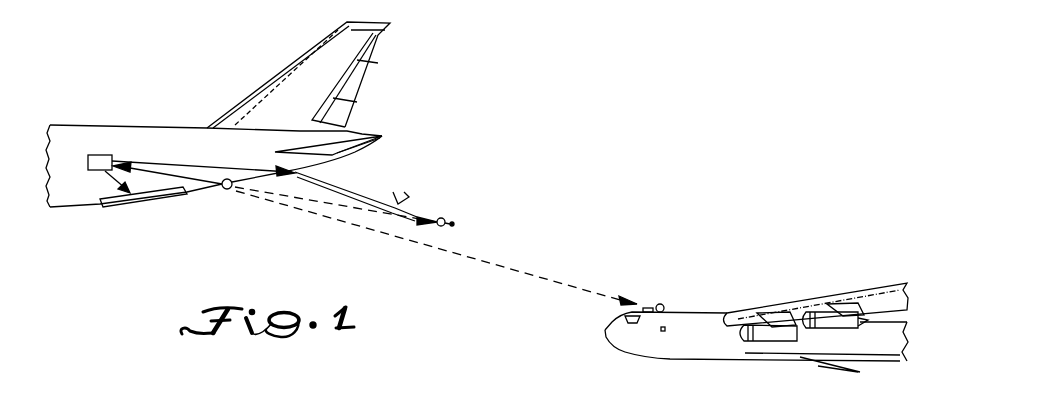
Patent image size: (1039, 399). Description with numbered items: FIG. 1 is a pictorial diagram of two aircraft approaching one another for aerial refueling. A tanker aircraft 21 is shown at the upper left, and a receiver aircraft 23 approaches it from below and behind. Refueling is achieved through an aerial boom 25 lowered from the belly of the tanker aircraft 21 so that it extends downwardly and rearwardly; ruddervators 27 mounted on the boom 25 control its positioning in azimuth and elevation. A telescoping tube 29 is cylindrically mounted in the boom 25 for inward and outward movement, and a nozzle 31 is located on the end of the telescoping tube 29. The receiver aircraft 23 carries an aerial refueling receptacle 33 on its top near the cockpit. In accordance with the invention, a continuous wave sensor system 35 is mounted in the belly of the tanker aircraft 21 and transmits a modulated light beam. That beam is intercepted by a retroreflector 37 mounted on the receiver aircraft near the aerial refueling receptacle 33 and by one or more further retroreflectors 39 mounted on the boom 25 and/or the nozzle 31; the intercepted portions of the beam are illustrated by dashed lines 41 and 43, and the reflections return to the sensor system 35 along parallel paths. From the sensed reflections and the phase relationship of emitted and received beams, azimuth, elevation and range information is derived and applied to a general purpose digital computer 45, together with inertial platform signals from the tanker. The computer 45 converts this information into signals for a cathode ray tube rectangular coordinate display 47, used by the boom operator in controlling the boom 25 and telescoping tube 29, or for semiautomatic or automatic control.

The tanker aircraft 21 is at (233, 102).
The receiver aircraft 23 is at (745, 300).
The aerial boom 25 is at (356, 178).
The ruddervators 27 is at (404, 193).
The telescoping tube 29 is at (441, 216).
The nozzle 31 is at (455, 226).
The aerial refueling receptacle 33 is at (647, 307).
The continuous wave (CW) sensor system 35 is at (224, 190).
The retroreflector 37 is at (662, 305).
The further retroreflectors 39 is at (451, 220).
The dashed line 41 is at (396, 243).
The dashed line 43 is at (320, 204).
The general purpose digital computer 45 is at (107, 156).
The cathode ray tube rectangular coordinate display 47 is at (137, 200).